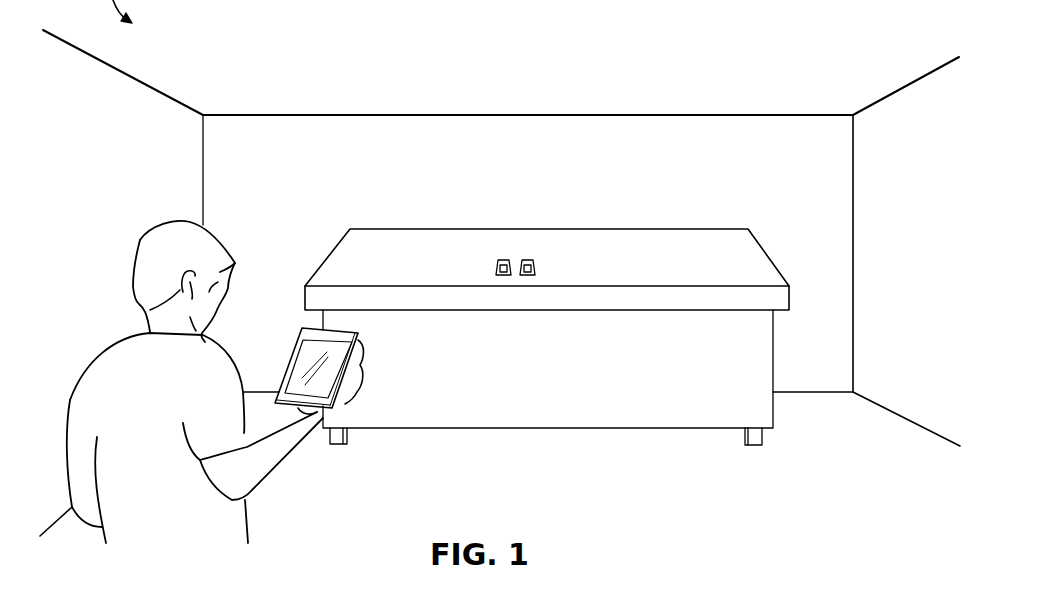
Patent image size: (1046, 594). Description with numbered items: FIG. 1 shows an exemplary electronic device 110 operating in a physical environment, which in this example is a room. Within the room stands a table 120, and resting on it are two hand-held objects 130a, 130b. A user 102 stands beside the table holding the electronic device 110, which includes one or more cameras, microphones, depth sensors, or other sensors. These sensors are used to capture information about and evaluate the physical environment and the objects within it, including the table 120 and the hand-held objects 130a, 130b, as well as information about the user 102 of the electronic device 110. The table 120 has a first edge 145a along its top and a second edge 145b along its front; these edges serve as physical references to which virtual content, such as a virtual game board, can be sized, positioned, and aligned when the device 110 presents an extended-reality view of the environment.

The user 102 is at (98, 377).
The electronic device 110 is at (298, 350).
The table 120 is at (352, 228).
The hand-held object 130a is at (500, 259).
The hand-held object 130b is at (530, 259).
The first edge of the table 145a is at (643, 228).
The second edge of the table 145b is at (658, 288).